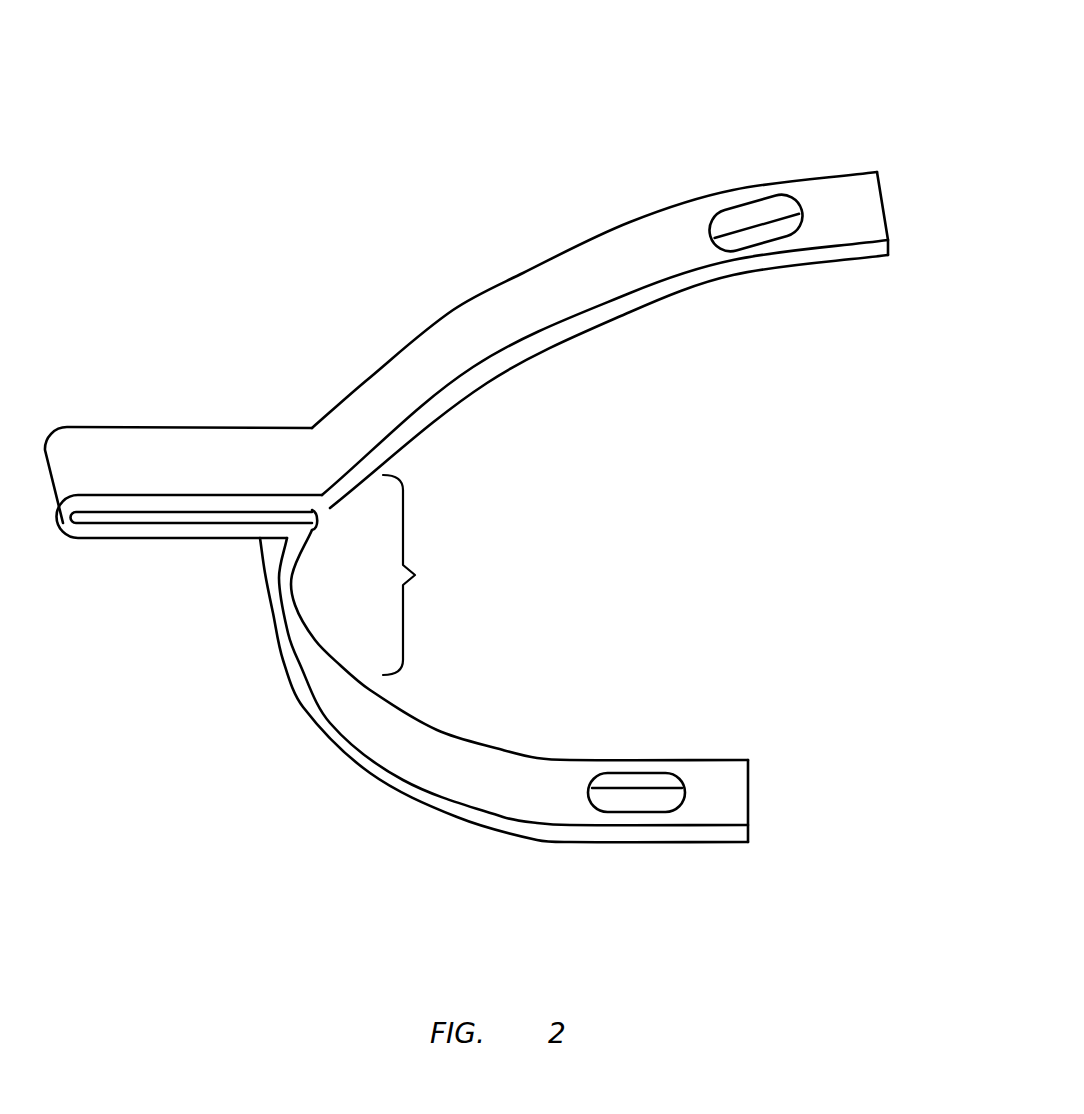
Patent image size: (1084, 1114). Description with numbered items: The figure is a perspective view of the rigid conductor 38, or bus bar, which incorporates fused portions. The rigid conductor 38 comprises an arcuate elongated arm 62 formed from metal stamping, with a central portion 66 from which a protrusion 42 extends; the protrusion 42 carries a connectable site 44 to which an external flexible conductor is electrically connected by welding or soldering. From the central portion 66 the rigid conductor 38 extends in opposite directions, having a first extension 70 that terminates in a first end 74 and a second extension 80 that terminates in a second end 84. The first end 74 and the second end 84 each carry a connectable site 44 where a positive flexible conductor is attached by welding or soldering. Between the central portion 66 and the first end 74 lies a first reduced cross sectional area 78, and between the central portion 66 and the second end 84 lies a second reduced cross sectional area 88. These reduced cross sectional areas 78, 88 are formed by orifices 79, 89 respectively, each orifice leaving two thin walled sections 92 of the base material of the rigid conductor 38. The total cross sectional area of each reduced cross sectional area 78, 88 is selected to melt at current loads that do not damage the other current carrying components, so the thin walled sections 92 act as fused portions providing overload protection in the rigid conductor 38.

The rigid conductor 38 is at (308, 94).
The protrusion 42 is at (67, 522).
The connectable site 44 is at (142, 448).
The arcuate elongated arm 62 is at (453, 340).
The central portion 66 is at (422, 575).
The first extension 70 is at (643, 215).
The first end 74 is at (837, 172).
The first reduced cross sectional area 78 is at (728, 192).
The orifice 79 is at (772, 220).
The second extension 80 is at (427, 810).
The second end 84 is at (723, 843).
The second reduced cross sectional area 88 is at (600, 820).
The orifice 89 is at (665, 798).
The thin walled sections 92 is at (747, 193).